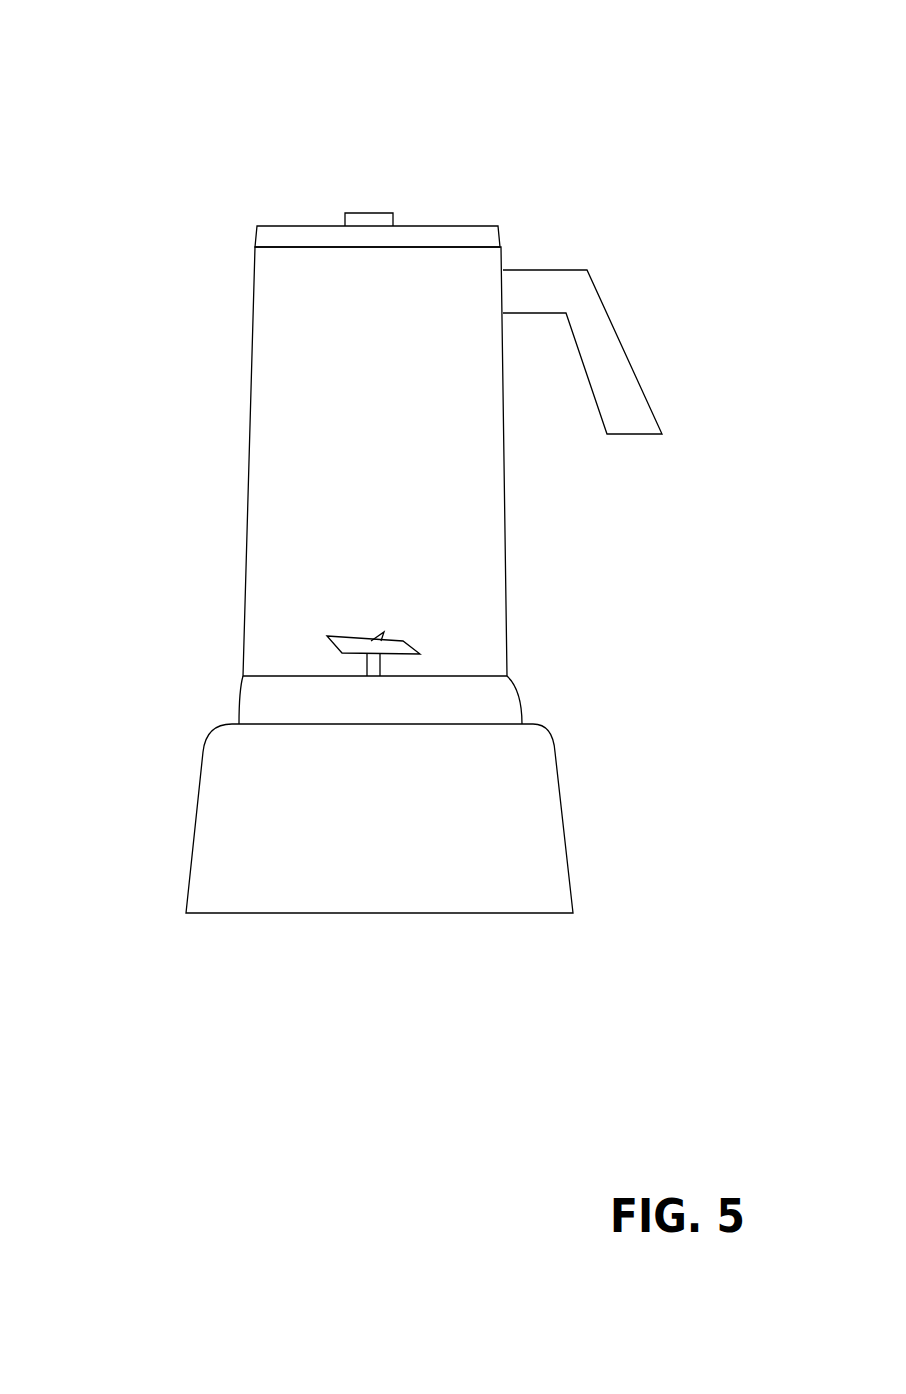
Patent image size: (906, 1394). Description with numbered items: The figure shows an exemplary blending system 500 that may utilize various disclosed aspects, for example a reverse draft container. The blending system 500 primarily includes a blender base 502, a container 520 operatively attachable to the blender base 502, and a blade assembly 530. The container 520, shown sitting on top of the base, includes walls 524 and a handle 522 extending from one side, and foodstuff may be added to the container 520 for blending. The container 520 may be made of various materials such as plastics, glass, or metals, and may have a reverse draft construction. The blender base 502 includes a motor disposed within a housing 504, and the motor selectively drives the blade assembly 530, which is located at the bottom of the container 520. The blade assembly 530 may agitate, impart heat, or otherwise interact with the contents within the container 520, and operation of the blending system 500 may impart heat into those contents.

The blending system 500 is at (540, 102).
The blender base 502 is at (178, 788).
The housing 504 is at (545, 731).
The container 520 is at (308, 235).
The handle 522 is at (612, 338).
The walls 524 is at (262, 305).
The blade assembly 530 is at (320, 623).